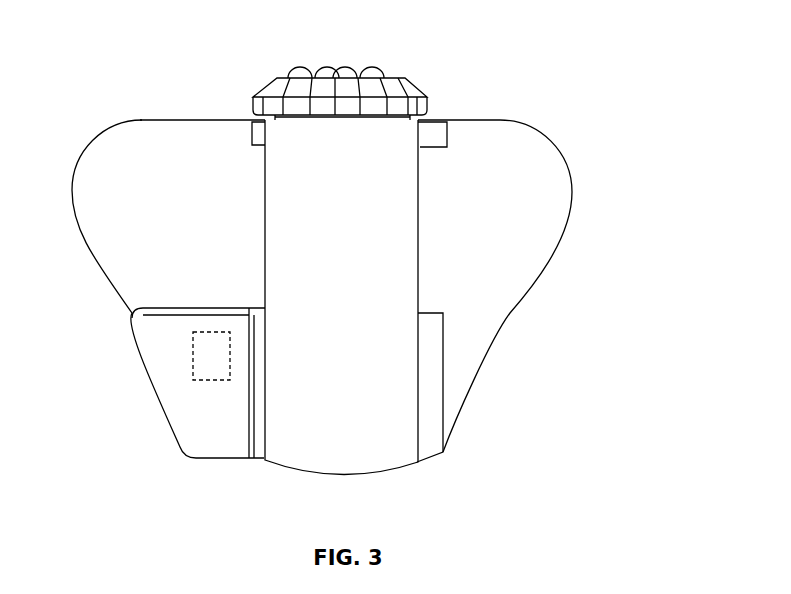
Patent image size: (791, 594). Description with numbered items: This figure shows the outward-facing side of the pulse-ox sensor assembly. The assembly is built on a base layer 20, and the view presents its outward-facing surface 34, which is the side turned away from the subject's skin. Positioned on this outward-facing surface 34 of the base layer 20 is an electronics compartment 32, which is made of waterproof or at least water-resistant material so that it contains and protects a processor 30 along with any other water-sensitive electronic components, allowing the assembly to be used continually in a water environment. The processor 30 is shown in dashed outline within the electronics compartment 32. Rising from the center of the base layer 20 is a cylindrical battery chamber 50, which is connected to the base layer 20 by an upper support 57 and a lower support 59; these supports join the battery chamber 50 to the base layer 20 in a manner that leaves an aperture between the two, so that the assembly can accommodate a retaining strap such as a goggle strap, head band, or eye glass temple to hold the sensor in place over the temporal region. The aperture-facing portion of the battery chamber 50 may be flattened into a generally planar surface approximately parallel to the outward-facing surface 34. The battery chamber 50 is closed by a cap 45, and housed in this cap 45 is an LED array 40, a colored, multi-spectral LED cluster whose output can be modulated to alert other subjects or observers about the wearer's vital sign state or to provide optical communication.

The base layer 20 is at (573, 193).
The processor 30 is at (211, 356).
The electronics compartment 32 is at (153, 345).
The outward-facing surface 34 is at (167, 218).
The LED array 40 is at (389, 64).
The cap 45 is at (420, 92).
The battery chamber 50 is at (372, 253).
The upper support 57 is at (260, 133).
The lower support 59 is at (255, 430).